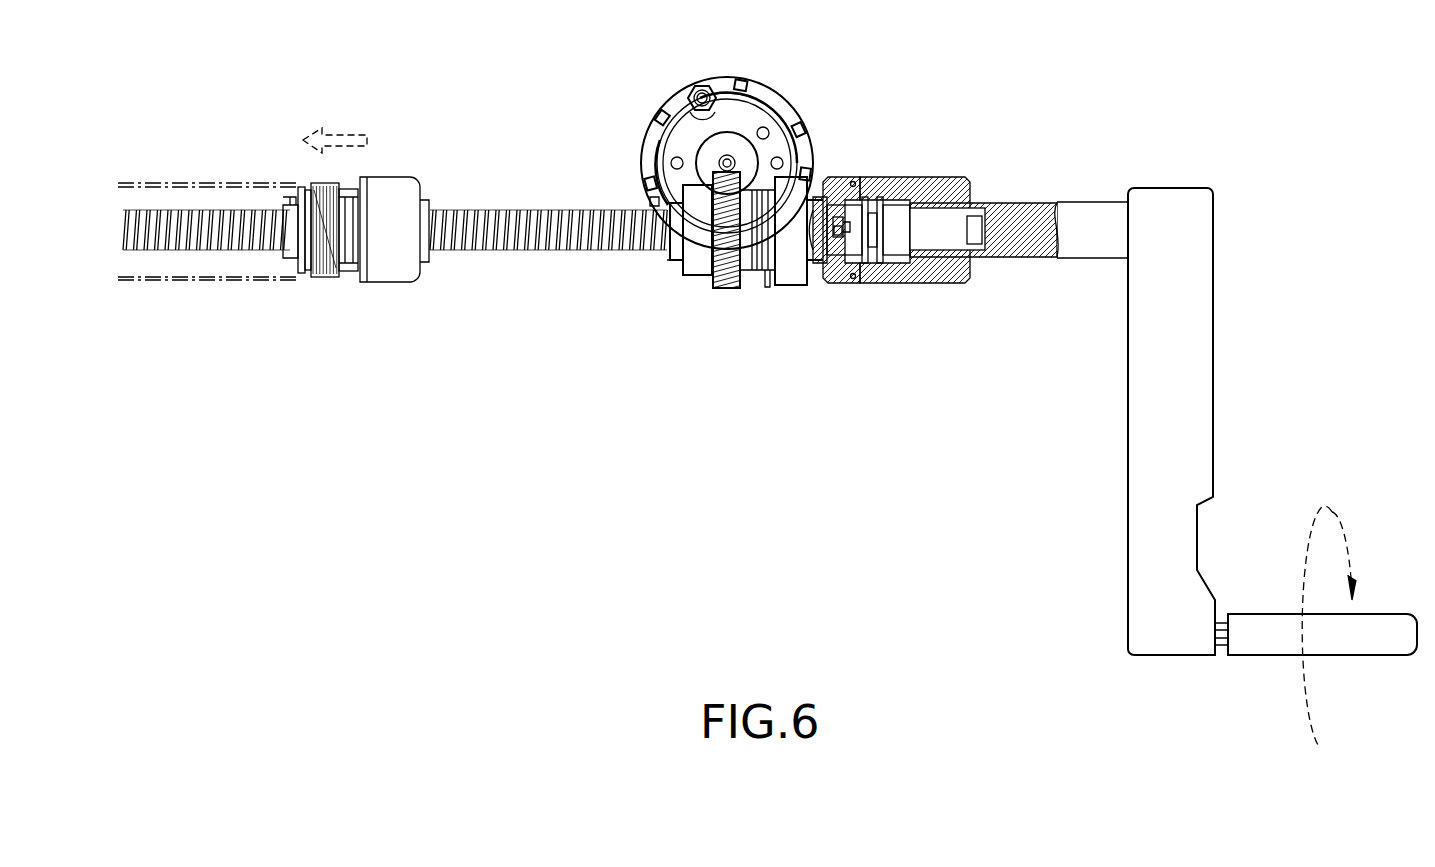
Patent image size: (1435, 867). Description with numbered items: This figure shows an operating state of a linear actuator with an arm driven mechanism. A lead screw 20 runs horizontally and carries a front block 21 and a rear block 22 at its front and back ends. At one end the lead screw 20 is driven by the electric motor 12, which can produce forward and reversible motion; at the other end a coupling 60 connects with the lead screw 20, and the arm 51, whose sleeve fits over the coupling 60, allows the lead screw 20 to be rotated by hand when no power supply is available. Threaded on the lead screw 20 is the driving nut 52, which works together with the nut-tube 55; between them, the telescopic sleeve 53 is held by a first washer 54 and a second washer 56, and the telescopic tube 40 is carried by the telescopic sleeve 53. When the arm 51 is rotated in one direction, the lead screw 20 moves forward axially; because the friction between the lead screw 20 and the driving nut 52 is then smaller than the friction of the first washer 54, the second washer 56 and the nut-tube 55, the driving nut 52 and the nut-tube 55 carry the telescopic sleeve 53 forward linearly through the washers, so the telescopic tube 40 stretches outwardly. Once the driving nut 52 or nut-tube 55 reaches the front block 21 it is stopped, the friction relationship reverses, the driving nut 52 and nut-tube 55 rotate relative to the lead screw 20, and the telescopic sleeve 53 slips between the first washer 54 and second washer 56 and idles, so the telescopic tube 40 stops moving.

The electric motor 12 is at (777, 100).
The lead screw 20 is at (498, 215).
The front block 21 is at (284, 206).
The rear block 22 is at (650, 205).
The telescopic tube 40 is at (174, 196).
The arm 51 is at (1233, 216).
The driving nut 52 is at (390, 270).
The telescopic sleeve 53 is at (322, 268).
The first washer 54 is at (341, 268).
The nut-tube 55 is at (302, 252).
The second washer 56 is at (310, 268).
The coupling 60 is at (920, 190).